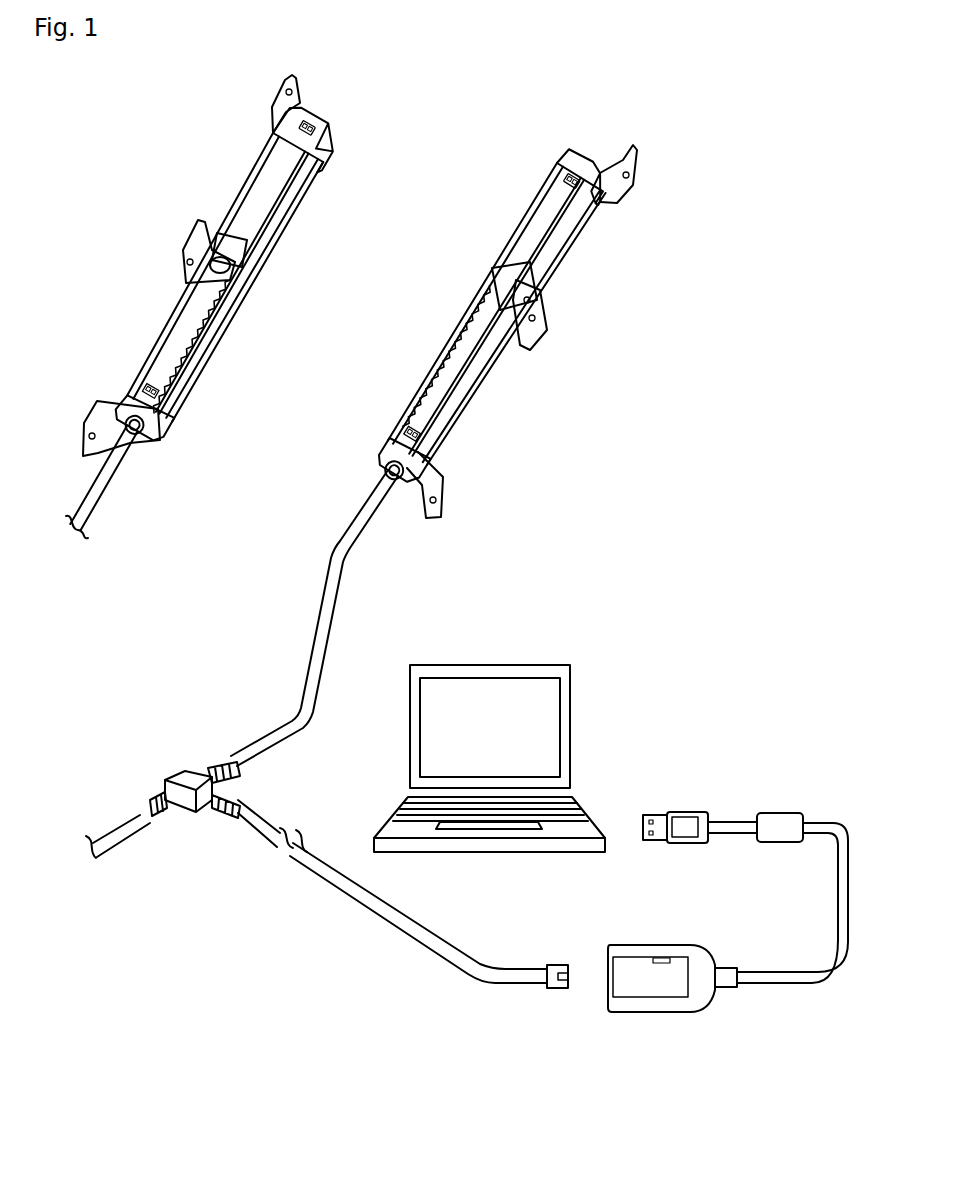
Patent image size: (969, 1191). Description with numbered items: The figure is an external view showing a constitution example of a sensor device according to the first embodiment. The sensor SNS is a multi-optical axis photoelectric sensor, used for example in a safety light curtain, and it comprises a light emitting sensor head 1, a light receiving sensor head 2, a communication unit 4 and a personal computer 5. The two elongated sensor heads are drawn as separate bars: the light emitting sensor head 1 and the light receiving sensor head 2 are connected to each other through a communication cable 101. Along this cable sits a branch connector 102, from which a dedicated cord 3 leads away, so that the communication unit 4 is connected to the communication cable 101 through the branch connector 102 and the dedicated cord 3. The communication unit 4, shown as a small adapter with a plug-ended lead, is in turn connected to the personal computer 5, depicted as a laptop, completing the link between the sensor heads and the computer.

The sensor SNS is at (165, 167).
The light emitting sensor head 1 is at (250, 272).
The light receiving sensor head 2 is at (493, 350).
The communication cable 101 is at (97, 482).
The branch connector 102 is at (195, 778).
The dedicated cord 3 is at (253, 833).
The communication unit 4 is at (660, 943).
The personal computer 5 is at (571, 713).